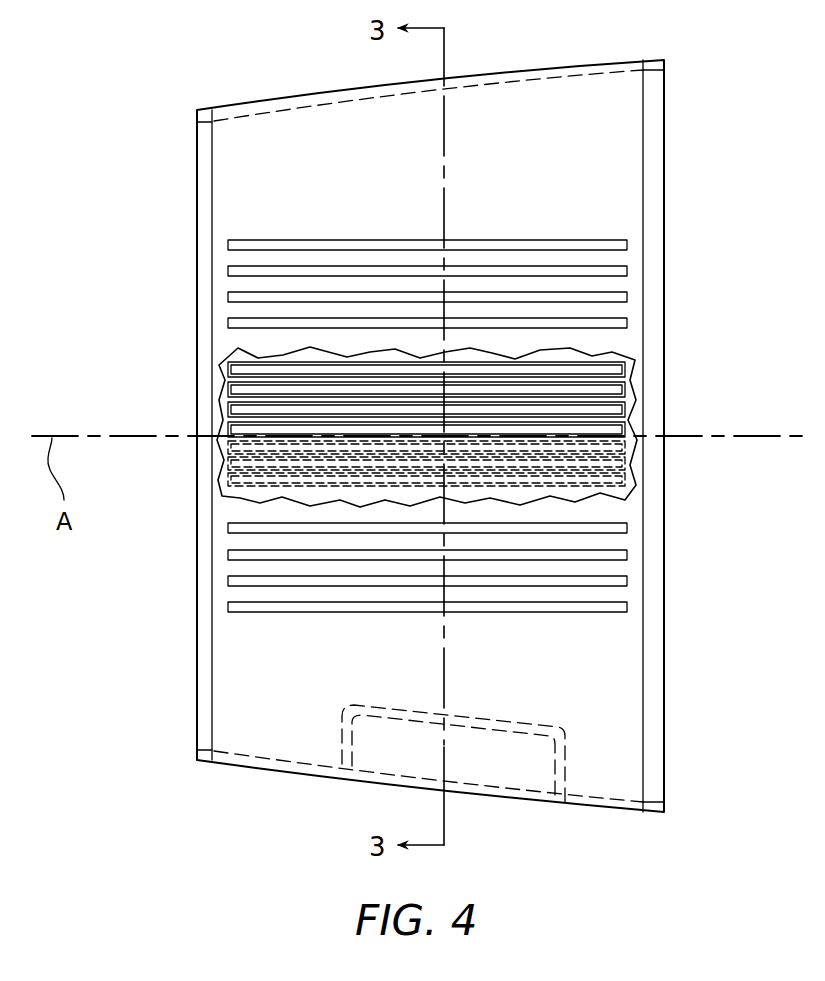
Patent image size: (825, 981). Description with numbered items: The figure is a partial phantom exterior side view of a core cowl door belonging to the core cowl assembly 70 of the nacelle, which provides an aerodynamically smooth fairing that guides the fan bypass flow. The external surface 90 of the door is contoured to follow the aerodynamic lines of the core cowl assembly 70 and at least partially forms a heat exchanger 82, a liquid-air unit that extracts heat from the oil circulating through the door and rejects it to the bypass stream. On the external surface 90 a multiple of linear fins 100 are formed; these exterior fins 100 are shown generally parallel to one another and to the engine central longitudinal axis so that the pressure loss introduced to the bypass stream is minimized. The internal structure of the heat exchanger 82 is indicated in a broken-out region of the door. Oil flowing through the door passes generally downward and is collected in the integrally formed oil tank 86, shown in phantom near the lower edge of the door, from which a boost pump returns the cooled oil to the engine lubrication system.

The core cowl assembly 70 is at (684, 142).
The external surface 90 is at (595, 225).
The linear fins 100 is at (620, 298).
The heat exchanger 82 is at (592, 408).
The oil tank 86 is at (514, 766).